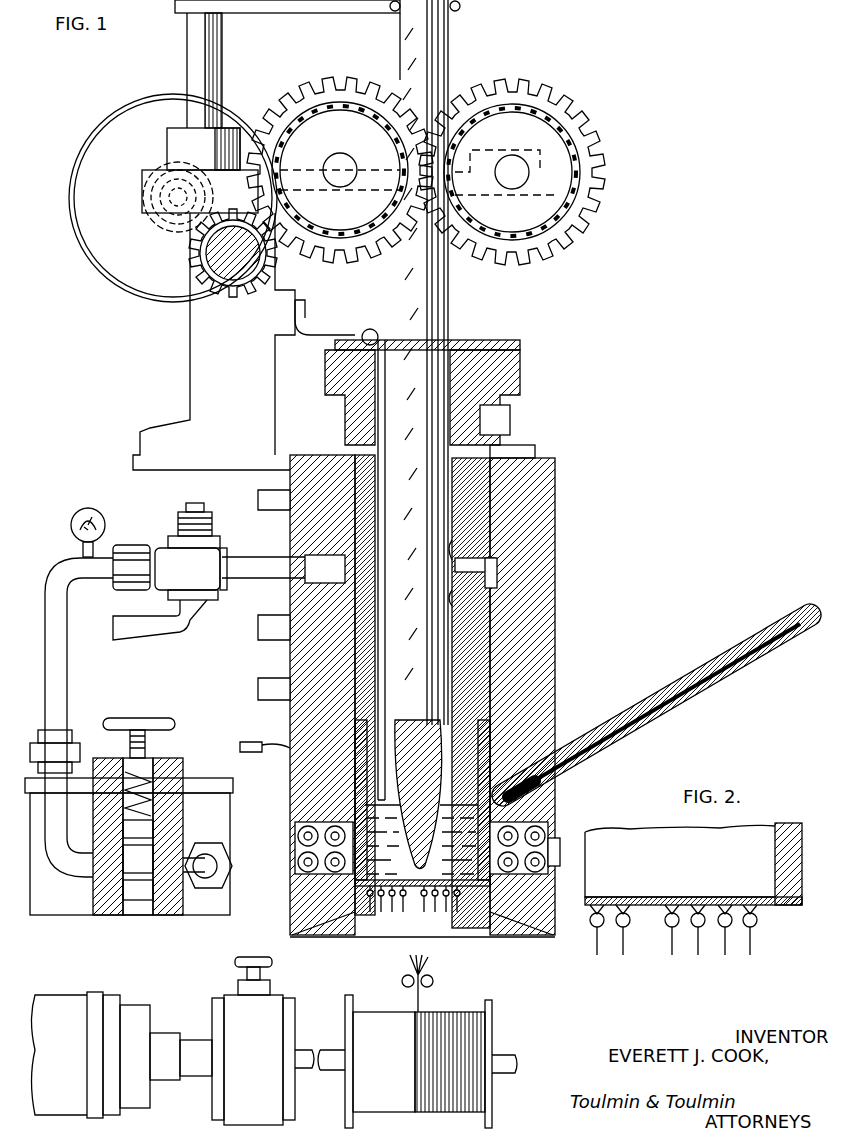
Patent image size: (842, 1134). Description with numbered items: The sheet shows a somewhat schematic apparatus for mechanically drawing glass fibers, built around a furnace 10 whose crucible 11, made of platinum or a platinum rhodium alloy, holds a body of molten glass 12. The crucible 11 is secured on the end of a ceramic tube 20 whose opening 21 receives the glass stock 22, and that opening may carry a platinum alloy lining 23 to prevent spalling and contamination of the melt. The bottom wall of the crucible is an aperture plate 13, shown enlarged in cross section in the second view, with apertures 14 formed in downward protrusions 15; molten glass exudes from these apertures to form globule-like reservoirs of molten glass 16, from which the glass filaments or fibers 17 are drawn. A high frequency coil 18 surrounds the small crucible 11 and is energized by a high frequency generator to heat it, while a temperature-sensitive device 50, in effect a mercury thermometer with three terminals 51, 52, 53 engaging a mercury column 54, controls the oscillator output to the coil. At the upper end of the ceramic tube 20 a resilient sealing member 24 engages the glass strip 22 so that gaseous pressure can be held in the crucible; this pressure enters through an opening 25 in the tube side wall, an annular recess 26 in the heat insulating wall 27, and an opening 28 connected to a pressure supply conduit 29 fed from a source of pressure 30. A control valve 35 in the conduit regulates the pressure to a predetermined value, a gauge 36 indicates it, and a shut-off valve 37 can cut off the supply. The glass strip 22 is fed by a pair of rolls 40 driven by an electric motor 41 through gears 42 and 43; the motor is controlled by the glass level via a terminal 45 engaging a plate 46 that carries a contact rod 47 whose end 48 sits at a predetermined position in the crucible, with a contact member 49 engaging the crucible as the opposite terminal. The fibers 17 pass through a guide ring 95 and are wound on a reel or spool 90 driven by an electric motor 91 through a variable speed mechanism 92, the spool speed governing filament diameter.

In FIG. 1, the furnace 10 is at (556, 656).
In FIG. 1, the crucible 11 is at (296, 783).
In FIG. 2, the crucible 11 is at (789, 832).
In FIG. 1, the body of molten glass 12 is at (460, 815).
In FIG. 1, the aperture plate 13 is at (468, 905).
In FIG. 2, the aperture plate 13 is at (797, 905).
In FIG. 1, the apertures 14 is at (362, 905).
In FIG. 2, the apertures 14 is at (700, 897).
In FIG. 2, the protrusions 15 is at (689, 928).
In FIG. 2, the globule-like reservoirs of molten glass 16 is at (632, 920).
In FIG. 2, the glass filaments or fibers 17 is at (598, 952).
In FIG. 1, the high frequency coil 18 is at (550, 836).
In FIG. 1, the ceramic tube 20 is at (470, 630).
In FIG. 1, the opening 21 is at (452, 600).
In FIG. 1, the glass stock 22 is at (435, 540).
In FIG. 1, the platinum alloy lining 23 is at (495, 560).
In FIG. 1, the resilient sealing member 24 is at (492, 340).
In FIG. 1, the opening 25 is at (480, 576).
In FIG. 1, the annular recess 26 is at (480, 586).
In FIG. 1, the heat insulating wall 27 is at (556, 486).
In FIG. 1, the opening 28 is at (325, 569).
In FIG. 1, the pressure supply conduit 29 is at (55, 652).
In FIG. 1, the source of pressure 30 is at (218, 800).
In FIG. 1, the control valve 35 is at (176, 776).
In FIG. 1, the gauge 36 is at (71, 525).
In FIG. 1, the shut-off valve 37 is at (186, 630).
In FIG. 1, the rolls 40 is at (315, 85).
In FIG. 1, the electric motor 41 is at (105, 138).
In FIG. 1, the gear 42 is at (162, 232).
In FIG. 1, the gear 43 is at (268, 264).
In FIG. 1, the terminal 45 is at (306, 306).
In FIG. 1, the plate 46 is at (368, 330).
In FIG. 1, the contact rod 47 is at (330, 366).
In FIG. 1, the end of contact rod 48 is at (300, 806).
In FIG. 1, the contact member 49 is at (292, 744).
In FIG. 1, the temperature-sensitive device 50 is at (658, 692).
In FIG. 1, the terminal 51 is at (616, 722).
In FIG. 1, the terminal 52 is at (706, 680).
In FIG. 1, the terminal 53 is at (742, 652).
In FIG. 1, the mercury column 54 is at (616, 746).
In FIG. 1, the reel or spool 90 is at (490, 1040).
In FIG. 1, the electric motor 91 is at (122, 1055).
In FIG. 1, the variable speed mechanism 92 is at (232, 1005).
In FIG. 1, the guide ring 95 is at (430, 988).